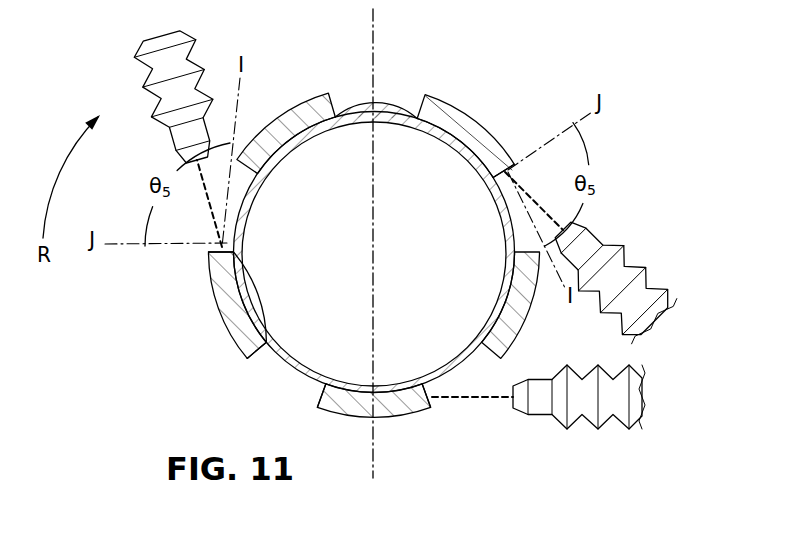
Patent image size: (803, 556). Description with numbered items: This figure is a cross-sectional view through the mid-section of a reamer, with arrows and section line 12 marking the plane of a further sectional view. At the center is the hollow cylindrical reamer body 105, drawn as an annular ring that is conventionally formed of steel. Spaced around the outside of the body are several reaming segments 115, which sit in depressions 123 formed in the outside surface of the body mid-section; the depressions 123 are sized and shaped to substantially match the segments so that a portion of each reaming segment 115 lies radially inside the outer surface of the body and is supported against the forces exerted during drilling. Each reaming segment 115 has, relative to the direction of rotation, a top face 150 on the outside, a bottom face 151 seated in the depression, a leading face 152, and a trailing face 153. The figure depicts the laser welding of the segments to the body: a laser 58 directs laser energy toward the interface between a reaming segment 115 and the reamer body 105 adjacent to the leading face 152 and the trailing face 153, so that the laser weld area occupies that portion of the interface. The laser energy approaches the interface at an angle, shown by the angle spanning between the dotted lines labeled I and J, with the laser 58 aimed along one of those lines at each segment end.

The section line 12- 12 is at (373, 9).
The laser 58 is at (652, 292).
The reamer body 105 is at (398, 105).
The reaming segments 115 is at (310, 106).
The depressions 123 is at (282, 167).
The top face 150 is at (418, 412).
The bottom face 151 is at (264, 319).
The leading face 152 is at (240, 246).
The trailing face 153 is at (249, 352).